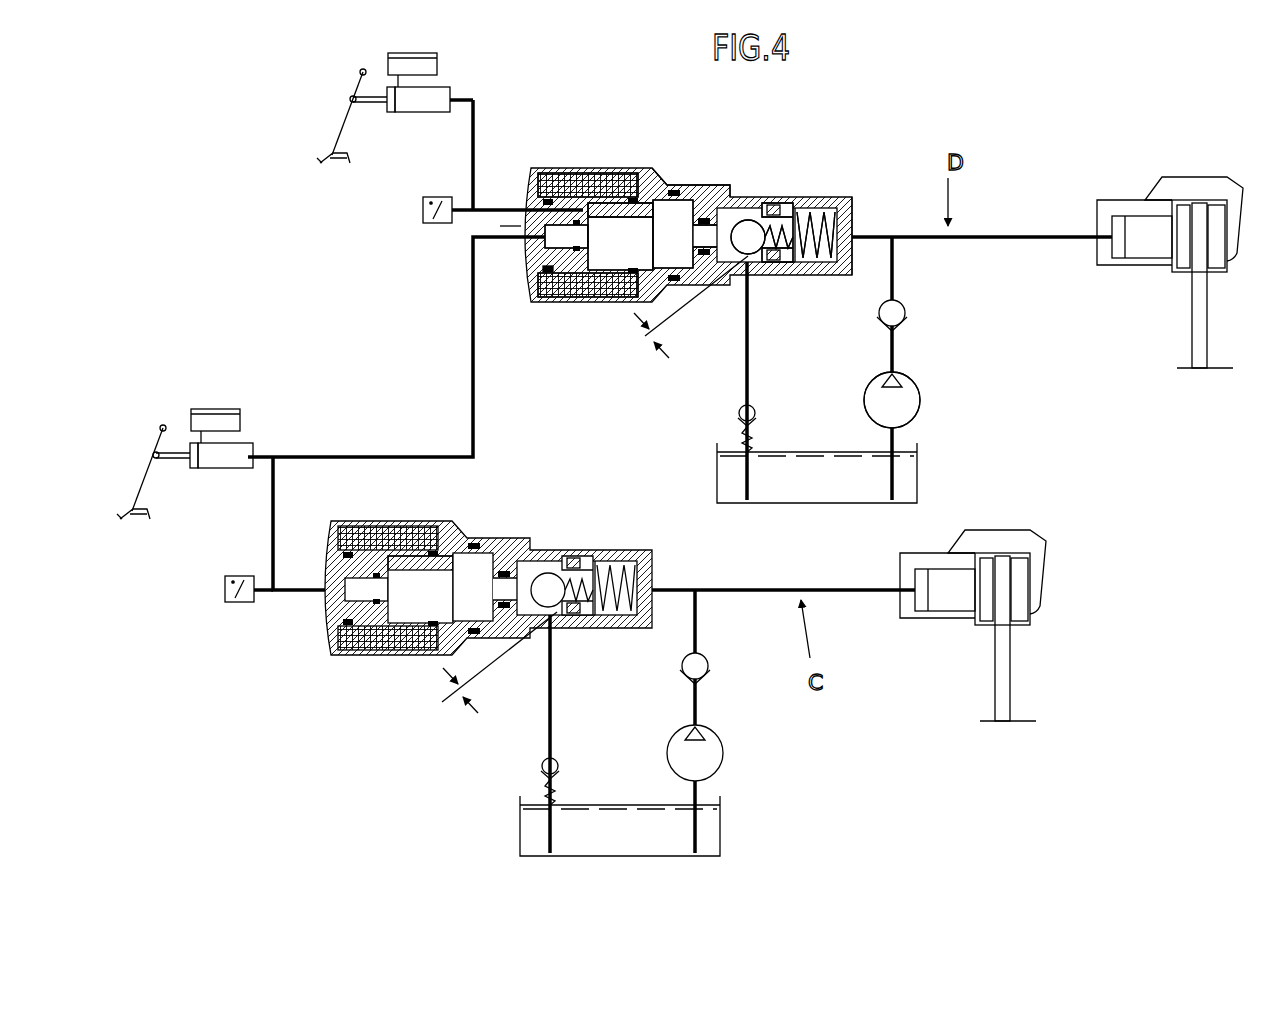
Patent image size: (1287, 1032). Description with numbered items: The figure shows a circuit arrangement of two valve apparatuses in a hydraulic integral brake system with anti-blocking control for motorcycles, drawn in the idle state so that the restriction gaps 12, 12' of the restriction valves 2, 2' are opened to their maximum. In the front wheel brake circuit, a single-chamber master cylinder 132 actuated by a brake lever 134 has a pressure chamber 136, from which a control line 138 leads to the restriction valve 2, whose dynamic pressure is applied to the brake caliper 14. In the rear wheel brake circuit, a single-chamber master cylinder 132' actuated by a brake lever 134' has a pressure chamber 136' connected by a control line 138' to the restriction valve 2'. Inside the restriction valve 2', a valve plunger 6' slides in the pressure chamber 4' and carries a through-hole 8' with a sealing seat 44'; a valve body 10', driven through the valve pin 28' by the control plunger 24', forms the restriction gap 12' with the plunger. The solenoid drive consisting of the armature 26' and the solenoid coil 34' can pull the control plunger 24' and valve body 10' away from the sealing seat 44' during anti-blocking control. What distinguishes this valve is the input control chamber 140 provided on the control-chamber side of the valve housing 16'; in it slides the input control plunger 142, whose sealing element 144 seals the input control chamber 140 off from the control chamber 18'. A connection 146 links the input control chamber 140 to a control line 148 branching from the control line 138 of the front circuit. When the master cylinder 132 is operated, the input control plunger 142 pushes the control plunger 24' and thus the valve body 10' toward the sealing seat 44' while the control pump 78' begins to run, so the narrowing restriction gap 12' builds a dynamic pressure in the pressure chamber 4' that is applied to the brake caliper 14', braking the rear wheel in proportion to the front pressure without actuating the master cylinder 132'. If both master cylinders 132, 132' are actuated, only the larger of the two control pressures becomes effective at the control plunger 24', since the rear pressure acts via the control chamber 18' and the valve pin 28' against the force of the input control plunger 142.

The restriction valve 2' is at (651, 241).
The restriction valve 2 is at (488, 615).
The control plunger 24' is at (588, 162).
The solenoid coil 34' is at (588, 313).
The valve housing 16' is at (689, 162).
The armature 26' is at (620, 243).
The valve pin 28' is at (725, 196).
The control chamber 18' is at (692, 261).
The valve body 10' is at (764, 199).
The valve plunger 6' is at (792, 196).
The sealing seat 44' is at (775, 263).
The pressure chamber 4' is at (818, 267).
The through-hole 8' is at (869, 232).
The restriction gap 12' is at (691, 323).
The restriction gap 12 is at (499, 681).
The sealing element 144 is at (568, 222).
The input control plunger 142 is at (564, 292).
The input control chamber 140 is at (578, 240).
The connection 146 is at (500, 226).
The brake caliper 14' is at (1170, 249).
The brake caliper 14 is at (983, 603).
The control pump 78' is at (917, 399).
The single-chamber master cylinder 132' is at (447, 82).
The single-chamber master cylinder 132 is at (241, 425).
The brake lever 134' is at (318, 116).
The brake lever 134 is at (134, 472).
The pressure chamber 136' is at (391, 125).
The pressure chamber 136 is at (193, 483).
The control line 138' is at (516, 146).
The control line 138 is at (262, 523).
The control line 148 is at (372, 455).